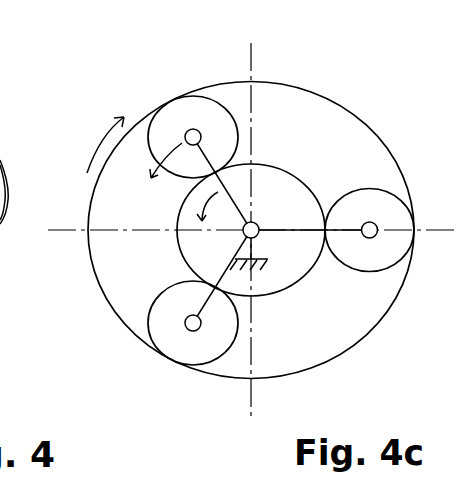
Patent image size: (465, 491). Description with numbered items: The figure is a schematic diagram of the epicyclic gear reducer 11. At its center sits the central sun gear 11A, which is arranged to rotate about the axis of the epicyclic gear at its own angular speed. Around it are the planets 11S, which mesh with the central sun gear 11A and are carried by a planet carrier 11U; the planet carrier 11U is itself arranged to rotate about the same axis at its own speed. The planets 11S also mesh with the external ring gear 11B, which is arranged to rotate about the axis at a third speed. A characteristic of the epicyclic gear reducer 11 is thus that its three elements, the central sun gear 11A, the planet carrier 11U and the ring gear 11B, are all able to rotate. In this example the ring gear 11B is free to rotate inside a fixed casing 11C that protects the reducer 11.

The epicyclic gear reducer 11 is at (234, 217).
The central sun gear 11A is at (190, 250).
The external ring gear 11B is at (302, 100).
The planet carrier 11U is at (323, 217).
The planets 11S is at (148, 315).
The fixed casing 11C is at (262, 271).